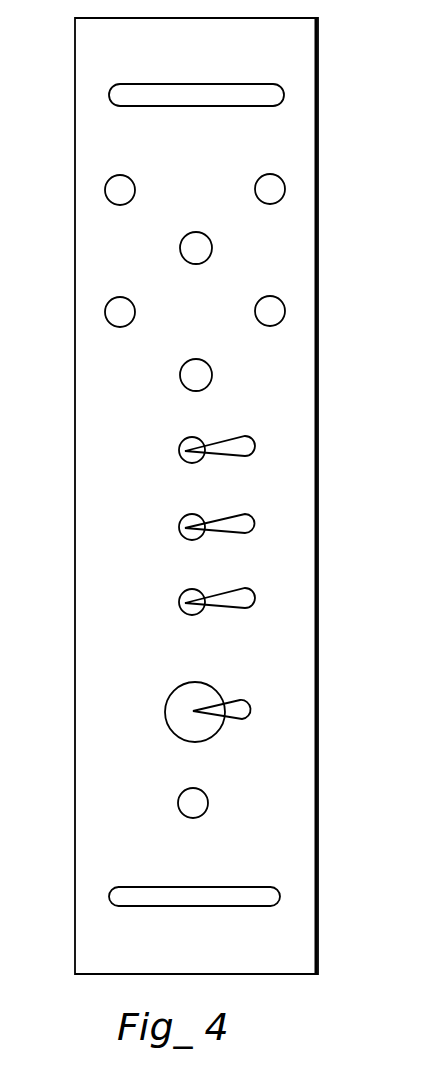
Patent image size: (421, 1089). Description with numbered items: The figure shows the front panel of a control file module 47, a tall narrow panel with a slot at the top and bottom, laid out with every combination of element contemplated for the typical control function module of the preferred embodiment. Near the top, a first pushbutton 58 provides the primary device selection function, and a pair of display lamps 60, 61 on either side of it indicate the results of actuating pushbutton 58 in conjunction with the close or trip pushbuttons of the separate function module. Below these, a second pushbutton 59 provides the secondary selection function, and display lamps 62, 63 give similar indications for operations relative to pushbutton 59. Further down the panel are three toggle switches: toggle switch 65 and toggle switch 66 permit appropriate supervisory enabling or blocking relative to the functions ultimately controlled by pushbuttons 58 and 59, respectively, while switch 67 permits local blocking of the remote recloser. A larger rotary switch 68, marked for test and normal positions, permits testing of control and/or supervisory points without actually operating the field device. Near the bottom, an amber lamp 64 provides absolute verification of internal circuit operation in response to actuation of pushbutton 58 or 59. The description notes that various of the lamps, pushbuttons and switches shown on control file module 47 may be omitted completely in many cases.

The control file module 47 is at (300, 52).
The pushbutton 58 is at (194, 232).
The pushbutton 59 is at (196, 360).
The display lamp 60 is at (285, 183).
The display lamp 61 is at (104, 190).
The display lamp 62 is at (285, 309).
The display lamp 63 is at (105, 311).
The amber lamp 64 is at (208, 804).
The toggle switch 65 is at (200, 436).
The toggle switch 66 is at (204, 540).
The switch 67 is at (190, 614).
The switch 68 is at (199, 686).